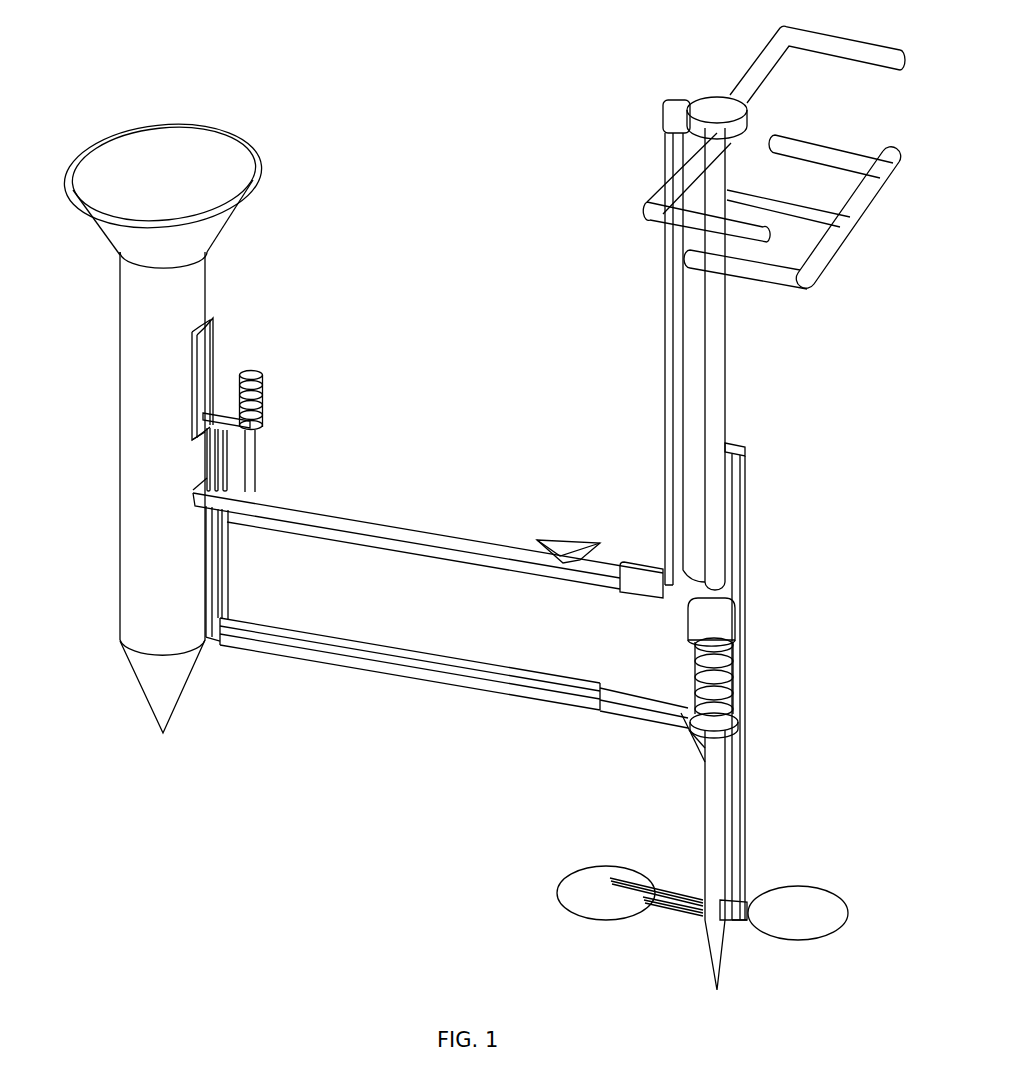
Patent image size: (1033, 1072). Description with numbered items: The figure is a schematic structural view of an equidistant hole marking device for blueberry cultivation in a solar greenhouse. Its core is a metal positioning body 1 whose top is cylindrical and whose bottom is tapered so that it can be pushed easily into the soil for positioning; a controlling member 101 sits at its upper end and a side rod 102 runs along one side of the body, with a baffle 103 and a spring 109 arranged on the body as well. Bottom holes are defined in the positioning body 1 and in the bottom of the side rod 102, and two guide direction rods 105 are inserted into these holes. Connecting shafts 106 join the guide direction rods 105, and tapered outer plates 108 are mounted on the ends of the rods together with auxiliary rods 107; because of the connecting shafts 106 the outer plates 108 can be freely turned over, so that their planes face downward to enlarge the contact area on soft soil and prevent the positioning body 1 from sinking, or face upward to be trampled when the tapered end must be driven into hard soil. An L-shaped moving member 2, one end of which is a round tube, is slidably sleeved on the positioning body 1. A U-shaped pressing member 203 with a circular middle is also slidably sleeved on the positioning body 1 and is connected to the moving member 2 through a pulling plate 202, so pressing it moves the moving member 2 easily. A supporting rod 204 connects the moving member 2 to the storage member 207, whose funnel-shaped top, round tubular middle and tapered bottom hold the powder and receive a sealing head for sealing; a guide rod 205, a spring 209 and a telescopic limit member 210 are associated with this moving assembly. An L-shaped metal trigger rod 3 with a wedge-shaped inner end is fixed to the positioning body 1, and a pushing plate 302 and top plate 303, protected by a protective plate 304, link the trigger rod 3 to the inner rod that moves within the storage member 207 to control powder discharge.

The positioning body 1 is at (705, 798).
The moving member 2 is at (673, 598).
The trigger rod 3 is at (620, 700).
The controlling member 101 is at (838, 258).
The side rod 102 is at (747, 743).
The baffle 103 is at (742, 708).
The guide direction rods 105 is at (682, 910).
The connecting shafts 106 is at (743, 922).
The auxiliary rods 107 is at (742, 912).
The outer plates 108 is at (592, 892).
The spring 109 is at (730, 667).
The pulling plate 202 is at (683, 507).
The pressing member 203 is at (645, 212).
The supporting rod 204 is at (478, 568).
The guide rod 205 is at (257, 462).
The storage member 207 is at (197, 292).
The spring 209 is at (258, 407).
The telescopic limit member 210 is at (565, 543).
The pushing plate 302 is at (475, 660).
The top plate 303 is at (225, 578).
The protective plate 304 is at (200, 378).